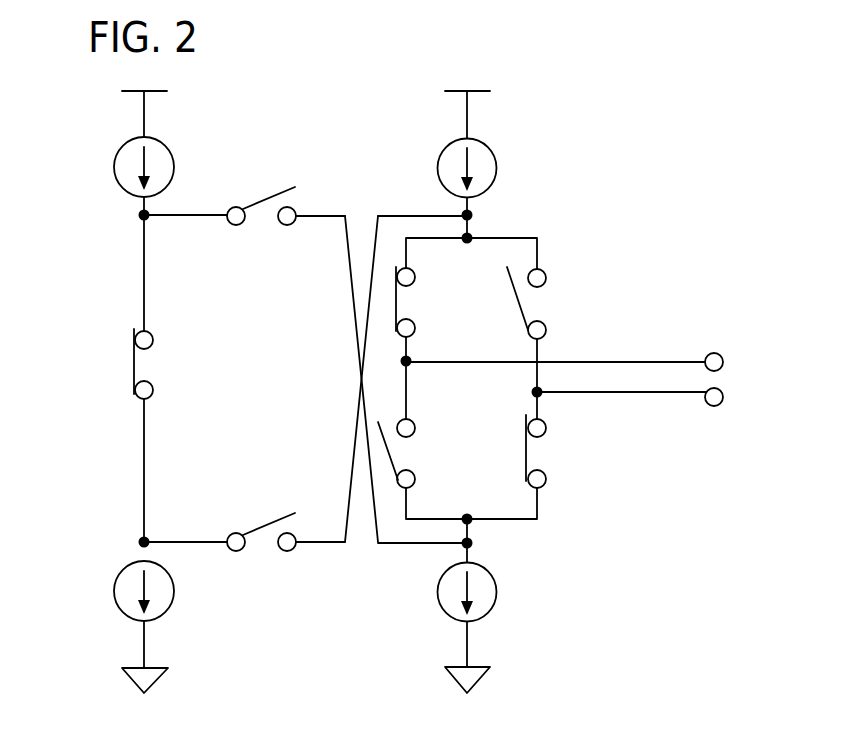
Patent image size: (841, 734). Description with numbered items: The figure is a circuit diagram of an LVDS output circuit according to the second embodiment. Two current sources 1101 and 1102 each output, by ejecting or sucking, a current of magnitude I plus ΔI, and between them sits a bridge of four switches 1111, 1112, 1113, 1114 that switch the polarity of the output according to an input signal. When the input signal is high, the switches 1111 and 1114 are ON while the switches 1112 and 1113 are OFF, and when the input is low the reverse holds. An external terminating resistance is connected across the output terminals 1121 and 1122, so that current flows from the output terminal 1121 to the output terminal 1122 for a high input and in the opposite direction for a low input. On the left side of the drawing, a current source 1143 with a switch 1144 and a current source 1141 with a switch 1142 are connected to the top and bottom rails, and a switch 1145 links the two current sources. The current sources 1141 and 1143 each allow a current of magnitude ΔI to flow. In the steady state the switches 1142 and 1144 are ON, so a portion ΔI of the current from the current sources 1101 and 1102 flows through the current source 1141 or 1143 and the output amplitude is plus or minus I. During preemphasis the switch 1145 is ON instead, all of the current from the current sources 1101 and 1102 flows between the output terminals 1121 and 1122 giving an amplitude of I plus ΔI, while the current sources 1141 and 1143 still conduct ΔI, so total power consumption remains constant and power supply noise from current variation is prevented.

The current source 1101 is at (497, 168).
The current source 1102 is at (497, 592).
The switch 1111 is at (416, 277).
The switch 1112 is at (547, 278).
The switch 1113 is at (416, 428).
The switch 1114 is at (547, 428).
The output terminal 1121 is at (723, 360).
The output terminal 1122 is at (723, 401).
The current source 1141 is at (114, 591).
The switch 1142 is at (289, 551).
The current source 1143 is at (114, 167).
The switch 1144 is at (294, 209).
The switch 1145 is at (133, 395).